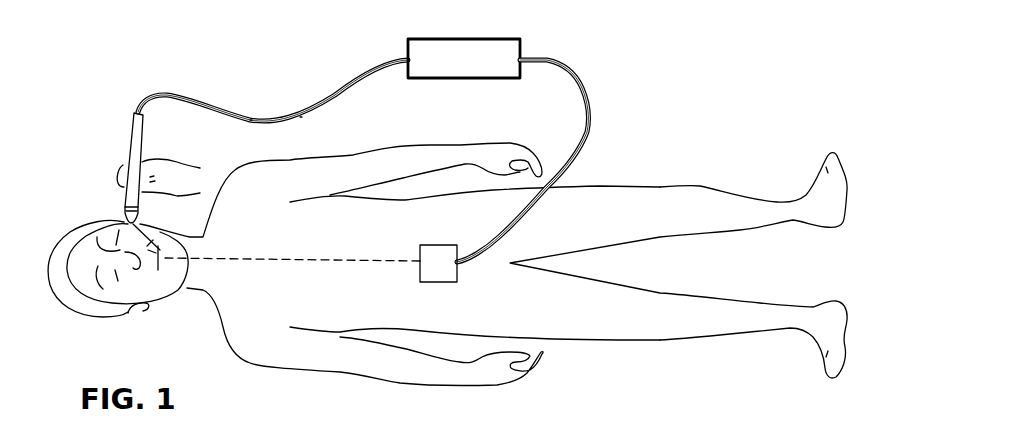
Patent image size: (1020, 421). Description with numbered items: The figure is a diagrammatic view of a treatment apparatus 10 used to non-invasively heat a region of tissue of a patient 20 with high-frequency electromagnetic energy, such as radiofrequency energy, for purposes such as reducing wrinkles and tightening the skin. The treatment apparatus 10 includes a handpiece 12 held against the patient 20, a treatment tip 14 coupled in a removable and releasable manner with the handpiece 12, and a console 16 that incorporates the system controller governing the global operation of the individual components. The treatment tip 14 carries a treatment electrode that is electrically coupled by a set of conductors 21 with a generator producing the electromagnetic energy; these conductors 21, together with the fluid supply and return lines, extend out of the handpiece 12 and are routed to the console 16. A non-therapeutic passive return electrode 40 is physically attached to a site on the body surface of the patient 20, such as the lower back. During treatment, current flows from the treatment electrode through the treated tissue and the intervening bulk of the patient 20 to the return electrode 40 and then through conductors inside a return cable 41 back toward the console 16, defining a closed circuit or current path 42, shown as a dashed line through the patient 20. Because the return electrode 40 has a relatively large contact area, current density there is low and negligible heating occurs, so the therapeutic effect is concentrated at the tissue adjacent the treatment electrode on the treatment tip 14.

The treatment apparatus 10 is at (350, 170).
The handpiece 12 is at (105, 157).
The treatment tip 14 is at (114, 212).
The console 16 is at (523, 43).
The patient 20 is at (223, 343).
The set of conductors 21 is at (327, 96).
The return electrode 40 is at (445, 282).
The return cable 41 is at (588, 130).
The current path 42 is at (362, 259).